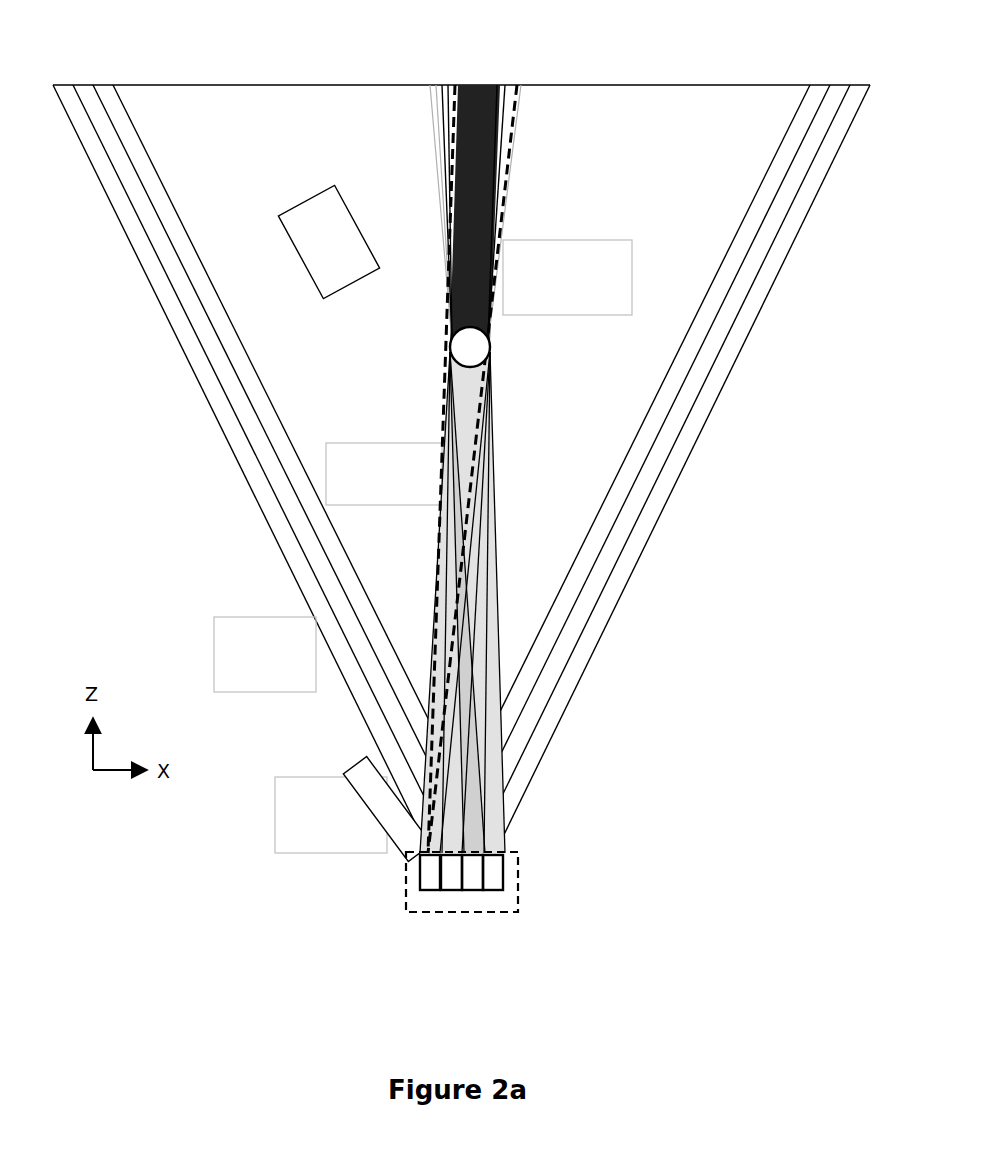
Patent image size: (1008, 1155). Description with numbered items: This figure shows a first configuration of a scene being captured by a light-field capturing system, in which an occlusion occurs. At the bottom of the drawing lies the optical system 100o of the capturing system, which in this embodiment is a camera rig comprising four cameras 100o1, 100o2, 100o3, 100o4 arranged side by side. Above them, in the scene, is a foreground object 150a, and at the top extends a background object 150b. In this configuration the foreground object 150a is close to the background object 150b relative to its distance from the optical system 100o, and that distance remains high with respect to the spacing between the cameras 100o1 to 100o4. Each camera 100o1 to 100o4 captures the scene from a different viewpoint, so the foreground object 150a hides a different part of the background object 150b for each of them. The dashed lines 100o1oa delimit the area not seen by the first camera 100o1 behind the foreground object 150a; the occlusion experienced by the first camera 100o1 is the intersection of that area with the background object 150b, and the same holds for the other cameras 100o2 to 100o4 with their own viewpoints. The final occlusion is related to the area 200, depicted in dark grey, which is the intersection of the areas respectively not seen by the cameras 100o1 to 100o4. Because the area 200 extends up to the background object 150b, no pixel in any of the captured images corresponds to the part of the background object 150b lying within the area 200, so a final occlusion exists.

The area 200 is at (477, 98).
The background object 150b is at (304, 92).
The foreground object 150a is at (446, 357).
The dashed lines 100o1oa is at (505, 192).
The optical system 100o is at (518, 883).
The first camera 100o1 is at (424, 890).
The second camera 100o2 is at (453, 890).
The third camera 100o3 is at (475, 890).
The fourth camera 100o4 is at (494, 890).